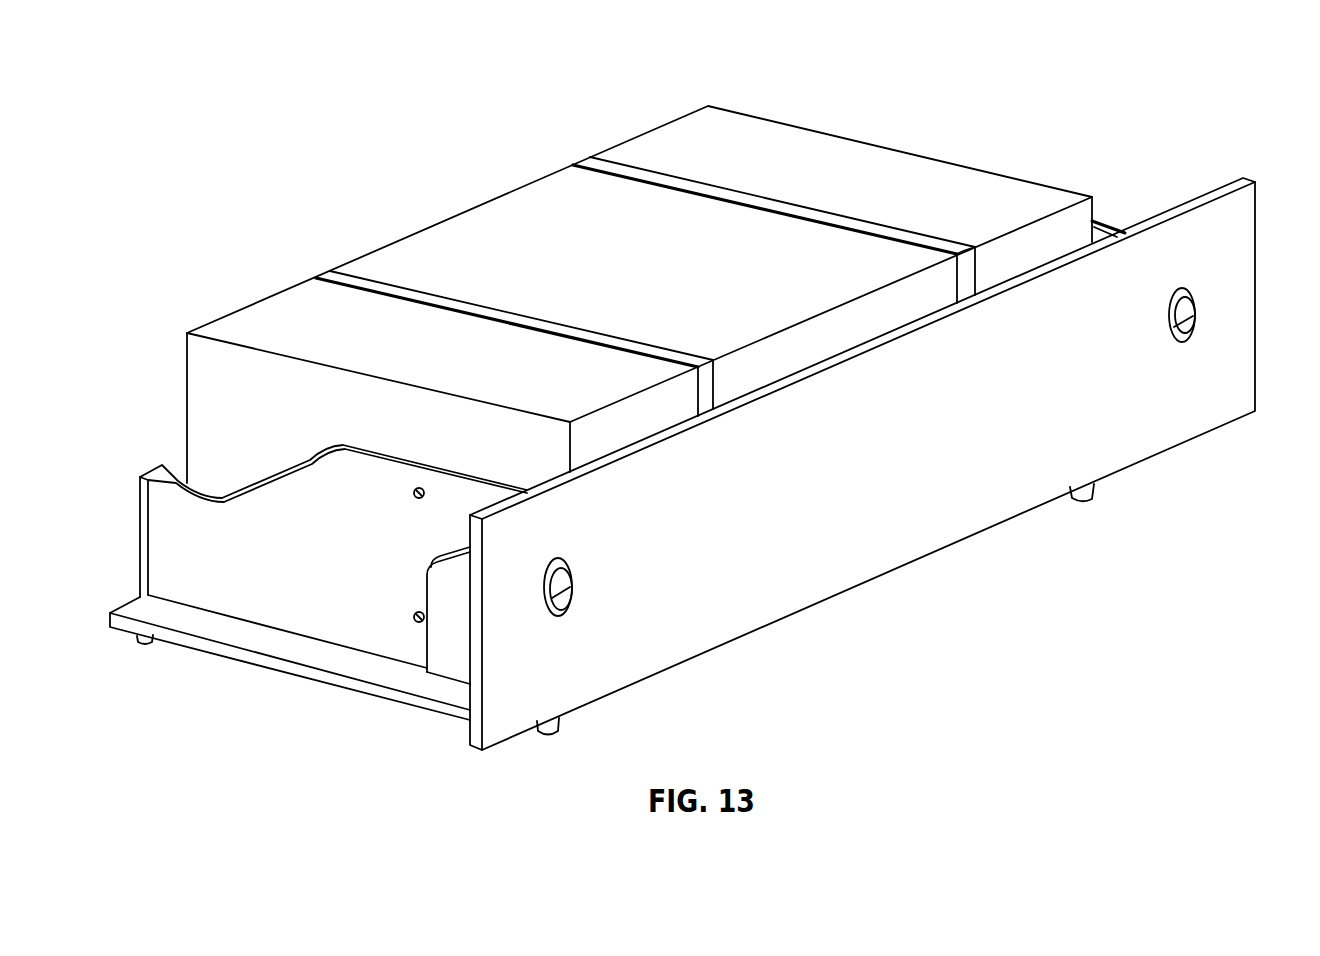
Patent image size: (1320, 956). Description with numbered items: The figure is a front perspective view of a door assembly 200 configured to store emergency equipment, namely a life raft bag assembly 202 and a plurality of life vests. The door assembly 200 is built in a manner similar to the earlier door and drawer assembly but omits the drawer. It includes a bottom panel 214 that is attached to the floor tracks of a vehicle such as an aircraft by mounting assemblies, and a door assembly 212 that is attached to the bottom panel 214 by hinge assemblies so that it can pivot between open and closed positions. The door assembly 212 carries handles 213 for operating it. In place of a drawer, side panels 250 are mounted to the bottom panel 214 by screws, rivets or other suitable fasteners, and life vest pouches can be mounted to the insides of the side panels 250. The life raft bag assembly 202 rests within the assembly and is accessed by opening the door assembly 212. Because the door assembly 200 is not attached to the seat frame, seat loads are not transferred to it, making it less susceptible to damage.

The door assembly 200 is at (936, 74).
The life raft bag assembly 202 is at (1074, 190).
The door assembly 212 is at (1206, 172).
The handles 213 is at (1167, 330).
The bottom panel 214 is at (298, 673).
The side panels 250 is at (285, 600).